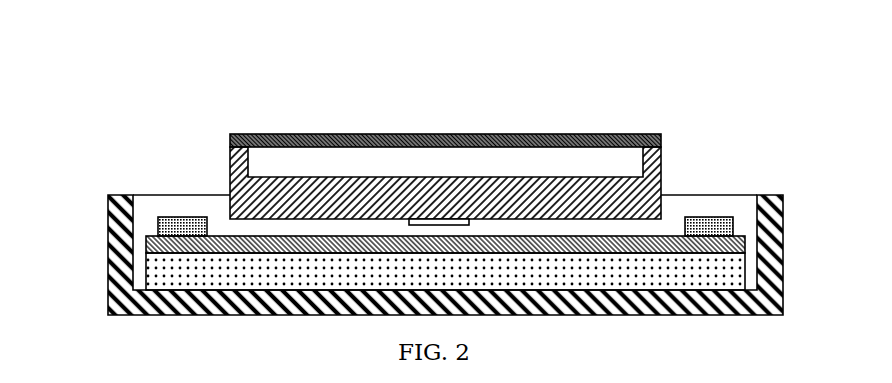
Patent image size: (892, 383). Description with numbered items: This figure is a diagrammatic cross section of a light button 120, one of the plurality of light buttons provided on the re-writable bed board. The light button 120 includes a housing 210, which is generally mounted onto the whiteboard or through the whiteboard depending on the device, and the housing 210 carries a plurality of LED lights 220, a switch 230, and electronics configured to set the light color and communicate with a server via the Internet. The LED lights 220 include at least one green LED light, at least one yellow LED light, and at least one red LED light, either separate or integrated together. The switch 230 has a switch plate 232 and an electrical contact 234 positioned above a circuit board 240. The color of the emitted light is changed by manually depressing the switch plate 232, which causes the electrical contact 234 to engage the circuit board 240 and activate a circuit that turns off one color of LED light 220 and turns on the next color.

The light button 120 is at (186, 92).
The housing 210 is at (157, 315).
The LED lights 220 is at (180, 218).
The switch 230 is at (506, 133).
The switch plate 232 is at (542, 134).
The electrical contact 234 is at (447, 222).
The circuit board 240 is at (345, 236).